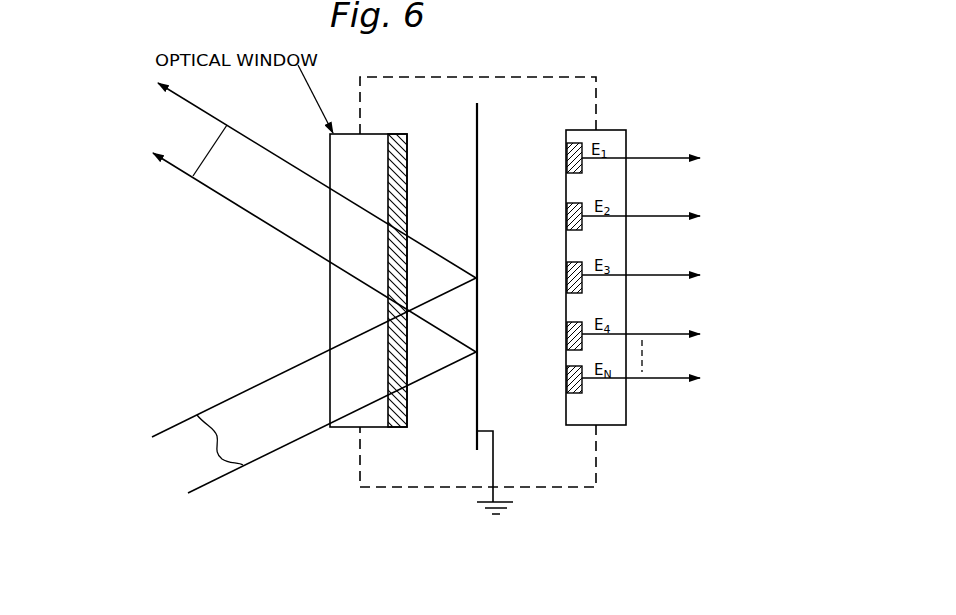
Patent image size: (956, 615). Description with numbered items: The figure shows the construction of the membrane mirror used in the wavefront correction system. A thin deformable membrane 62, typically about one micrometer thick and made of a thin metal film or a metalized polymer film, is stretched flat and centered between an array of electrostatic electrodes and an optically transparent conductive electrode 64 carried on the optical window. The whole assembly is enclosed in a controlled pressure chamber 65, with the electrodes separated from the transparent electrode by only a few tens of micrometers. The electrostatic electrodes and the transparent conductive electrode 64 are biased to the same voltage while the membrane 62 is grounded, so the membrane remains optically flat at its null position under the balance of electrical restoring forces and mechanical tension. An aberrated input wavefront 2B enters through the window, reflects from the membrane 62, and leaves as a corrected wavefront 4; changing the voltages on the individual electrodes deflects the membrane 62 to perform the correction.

The controlled pressure chamber 65 is at (528, 36).
The optically transparent conductive electrode 64 is at (383, 417).
The deformable membrane 62 is at (476, 448).
The corrected wavefront 4 is at (203, 167).
The input wavefront 2B is at (196, 414).